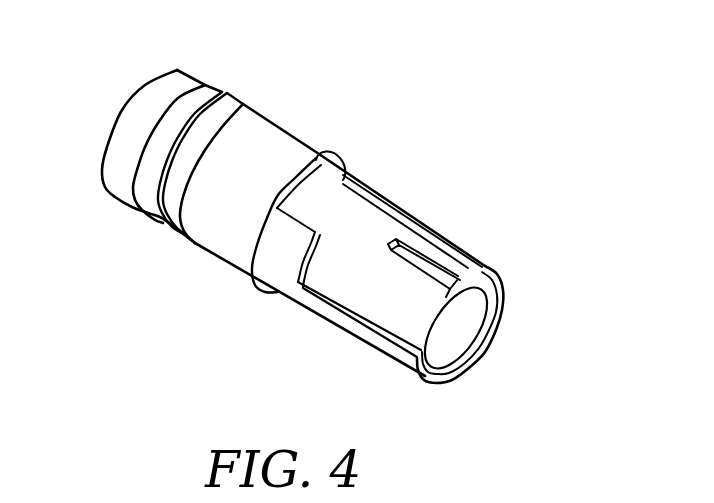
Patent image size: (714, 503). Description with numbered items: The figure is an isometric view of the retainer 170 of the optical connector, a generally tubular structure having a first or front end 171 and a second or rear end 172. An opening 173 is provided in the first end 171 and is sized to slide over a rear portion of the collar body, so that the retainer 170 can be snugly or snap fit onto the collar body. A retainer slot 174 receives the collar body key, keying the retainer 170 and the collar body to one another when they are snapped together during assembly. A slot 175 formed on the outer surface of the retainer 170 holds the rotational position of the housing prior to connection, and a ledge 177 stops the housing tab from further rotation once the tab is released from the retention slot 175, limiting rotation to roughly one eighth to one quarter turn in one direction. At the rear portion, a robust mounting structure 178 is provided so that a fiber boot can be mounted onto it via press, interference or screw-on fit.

The retainer 170 is at (387, 175).
The first end 171 is at (472, 297).
The second end 172 is at (128, 103).
The opening 173 is at (452, 338).
The retainer slot 174 is at (431, 276).
The slot 175 is at (315, 205).
The ledge 177 is at (353, 313).
The mounting structure 178 is at (147, 204).